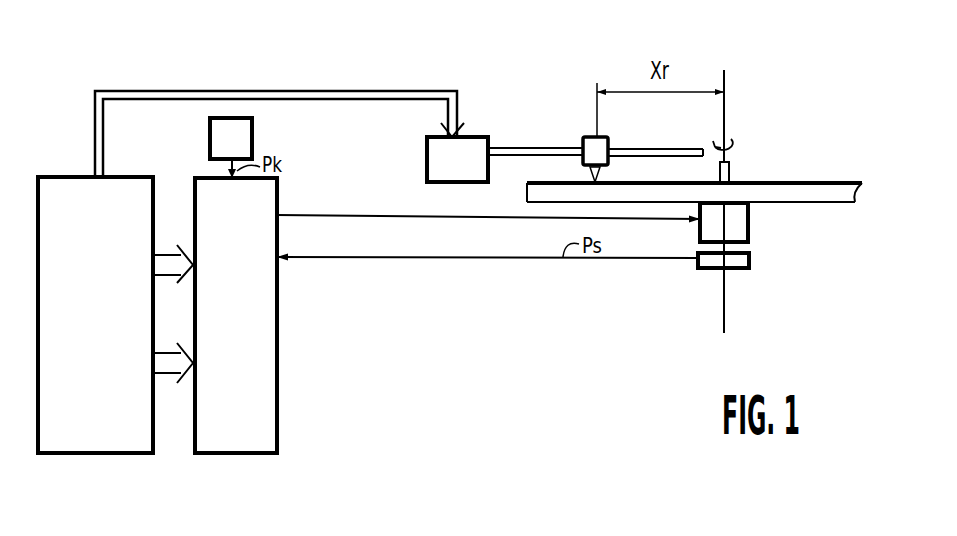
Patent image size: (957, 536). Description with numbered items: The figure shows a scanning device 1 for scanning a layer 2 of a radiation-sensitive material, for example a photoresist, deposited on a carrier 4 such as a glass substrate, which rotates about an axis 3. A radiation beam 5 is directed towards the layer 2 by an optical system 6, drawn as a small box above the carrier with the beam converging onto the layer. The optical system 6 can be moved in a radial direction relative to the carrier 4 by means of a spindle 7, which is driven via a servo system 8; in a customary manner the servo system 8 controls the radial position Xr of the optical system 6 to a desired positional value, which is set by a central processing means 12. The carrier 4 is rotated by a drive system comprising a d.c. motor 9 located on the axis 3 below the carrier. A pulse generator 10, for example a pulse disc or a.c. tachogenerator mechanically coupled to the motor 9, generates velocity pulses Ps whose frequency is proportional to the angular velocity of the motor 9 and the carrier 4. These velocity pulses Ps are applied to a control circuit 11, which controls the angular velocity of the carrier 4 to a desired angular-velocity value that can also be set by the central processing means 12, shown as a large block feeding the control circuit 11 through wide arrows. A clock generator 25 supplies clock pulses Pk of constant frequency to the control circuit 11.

The scanning device 1 is at (610, 51).
The layer of radiation-sensitive material 2 is at (798, 183).
The axis 3 is at (726, 98).
The carrier 4 is at (856, 202).
The radiation beam 5 is at (600, 172).
The optical system 6 is at (597, 142).
The spindle 7 is at (675, 148).
The servo system 8 is at (470, 150).
The d.c. motor 9 is at (738, 229).
The pulse generator 10 is at (742, 263).
The control circuit 11 is at (261, 440).
The central processing means 12 is at (127, 442).
The clock generator 25 is at (243, 134).